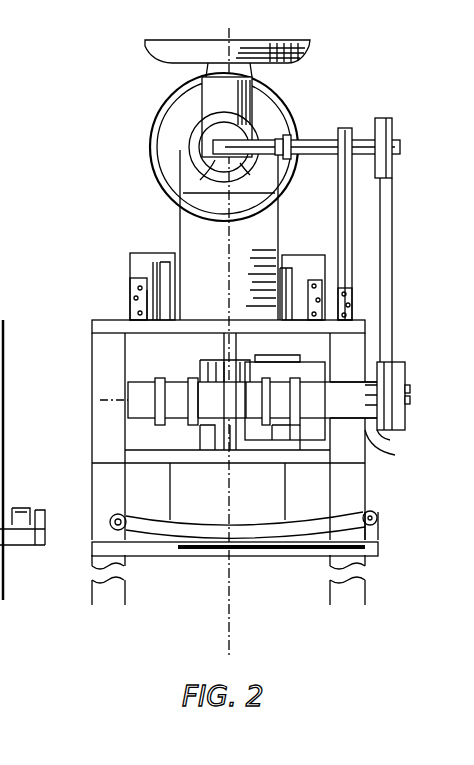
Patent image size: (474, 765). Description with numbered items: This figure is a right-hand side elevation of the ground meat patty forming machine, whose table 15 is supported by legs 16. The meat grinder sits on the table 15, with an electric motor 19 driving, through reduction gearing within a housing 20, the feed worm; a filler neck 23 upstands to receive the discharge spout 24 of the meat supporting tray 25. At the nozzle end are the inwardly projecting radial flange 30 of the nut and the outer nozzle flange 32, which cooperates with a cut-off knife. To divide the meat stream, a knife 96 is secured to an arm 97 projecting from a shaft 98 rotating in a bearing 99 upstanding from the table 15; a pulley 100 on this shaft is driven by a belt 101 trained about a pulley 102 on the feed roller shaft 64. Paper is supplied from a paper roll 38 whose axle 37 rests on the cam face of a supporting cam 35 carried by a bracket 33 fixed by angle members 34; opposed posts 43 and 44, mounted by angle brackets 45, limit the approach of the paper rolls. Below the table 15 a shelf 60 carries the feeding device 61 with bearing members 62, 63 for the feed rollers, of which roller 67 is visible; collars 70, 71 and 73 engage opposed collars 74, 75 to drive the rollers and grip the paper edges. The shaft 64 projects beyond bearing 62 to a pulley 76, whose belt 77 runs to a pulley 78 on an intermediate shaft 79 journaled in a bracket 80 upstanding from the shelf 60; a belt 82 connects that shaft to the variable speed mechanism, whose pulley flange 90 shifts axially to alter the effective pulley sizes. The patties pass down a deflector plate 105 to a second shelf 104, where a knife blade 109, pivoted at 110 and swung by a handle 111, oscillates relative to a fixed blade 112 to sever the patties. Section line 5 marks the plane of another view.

The section line 5- 5 is at (262, 28).
The meat supporting tray 25 is at (150, 44).
The discharge spout 24 is at (258, 68).
The electric motor 19 is at (165, 112).
The filler neck 23 is at (205, 88).
The paper roll 38 is at (180, 202).
The housing 20 is at (188, 162).
The flange 32 is at (203, 176).
The inwardly projecting radial flange 30 is at (250, 178).
The arm 97 is at (292, 142).
The knife 96 is at (287, 133).
The shaft 98 is at (288, 155).
The bearing 99 is at (347, 132).
The pulley 100 is at (393, 136).
The belt 101 is at (392, 205).
The post 44 is at (165, 258).
The axle 37 is at (152, 262).
The bracket 33 is at (137, 281).
The angle bracket 45 is at (138, 292).
The angle member 34 is at (140, 306).
The post 43 is at (290, 256).
The table 15 is at (100, 327).
The leg 16 is at (100, 472).
The shelf 60 is at (178, 478).
The feeding device 61 is at (96, 402).
The bearing member 63 is at (127, 428).
The bearing member 62 is at (340, 440).
The collar 71 is at (162, 378).
The feed roller 67 is at (145, 412).
The collar 73 is at (200, 371).
The supporting cam 35 is at (165, 338).
The collar 75 is at (208, 400).
The collar 74 is at (245, 400).
The bracket 80 is at (292, 370).
The collar 70 is at (284, 362).
The pulley flange 90 is at (208, 450).
The belt 82 is at (233, 450).
The deflector plate 105 is at (288, 470).
The shaft 64 is at (410, 400).
The intermediate shaft 79 is at (375, 375).
The pulley 78 is at (396, 366).
The belt 77 is at (406, 380).
The pulley 76 is at (406, 425).
The pulley 102 is at (397, 446).
The handle 111 is at (136, 516).
The pivot 110 is at (378, 518).
The knife blade 109 is at (238, 528).
The second shelf 104 is at (148, 552).
The fixed blade 112 is at (20, 550).